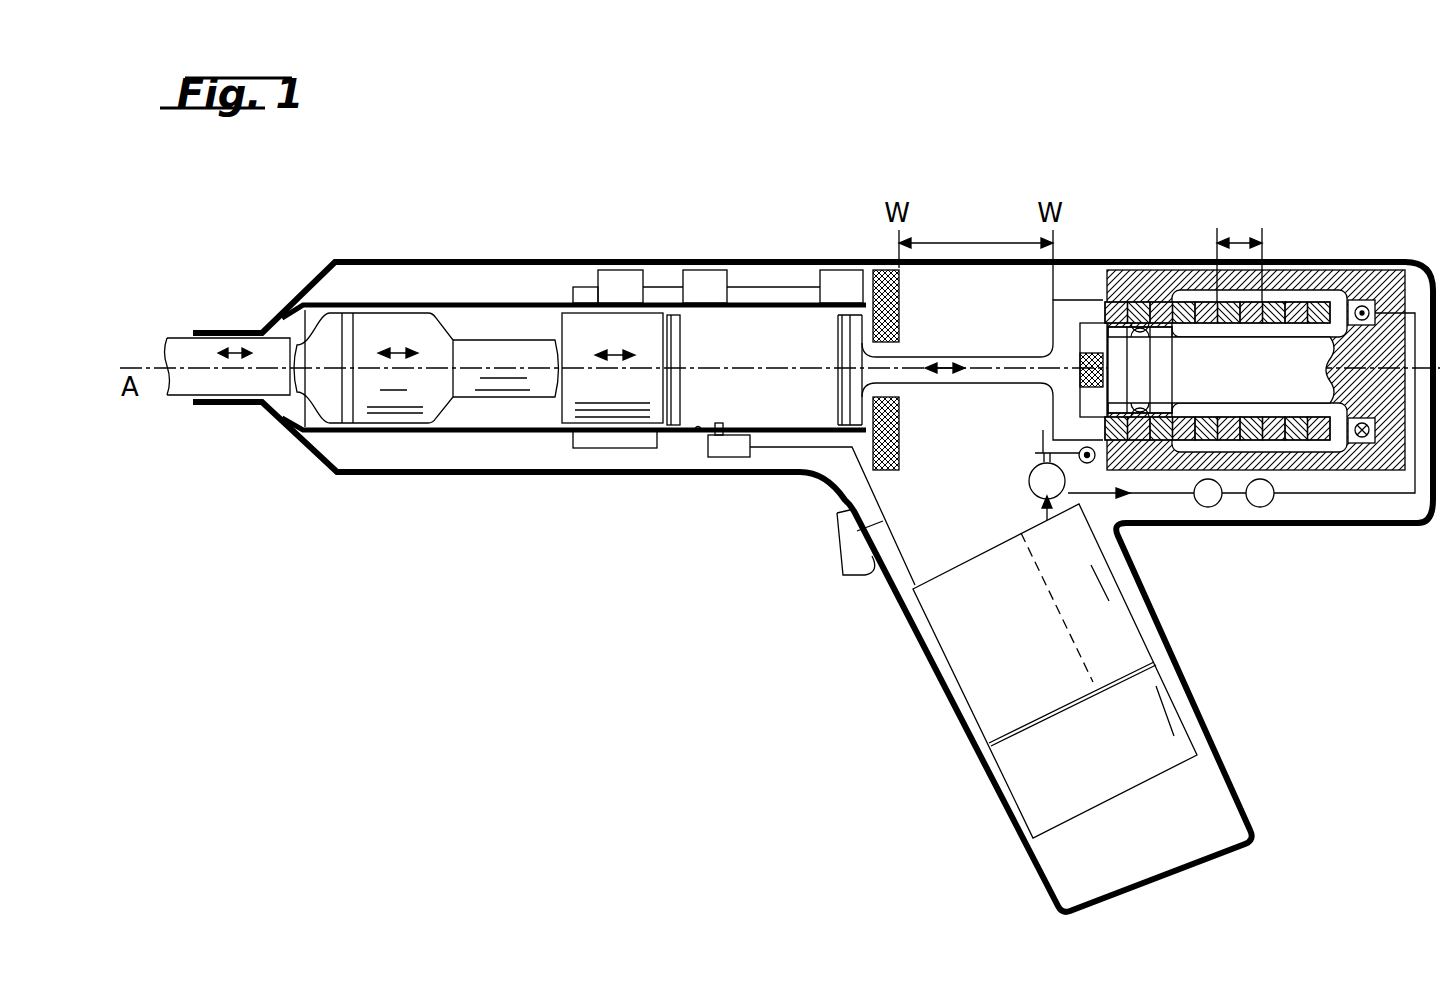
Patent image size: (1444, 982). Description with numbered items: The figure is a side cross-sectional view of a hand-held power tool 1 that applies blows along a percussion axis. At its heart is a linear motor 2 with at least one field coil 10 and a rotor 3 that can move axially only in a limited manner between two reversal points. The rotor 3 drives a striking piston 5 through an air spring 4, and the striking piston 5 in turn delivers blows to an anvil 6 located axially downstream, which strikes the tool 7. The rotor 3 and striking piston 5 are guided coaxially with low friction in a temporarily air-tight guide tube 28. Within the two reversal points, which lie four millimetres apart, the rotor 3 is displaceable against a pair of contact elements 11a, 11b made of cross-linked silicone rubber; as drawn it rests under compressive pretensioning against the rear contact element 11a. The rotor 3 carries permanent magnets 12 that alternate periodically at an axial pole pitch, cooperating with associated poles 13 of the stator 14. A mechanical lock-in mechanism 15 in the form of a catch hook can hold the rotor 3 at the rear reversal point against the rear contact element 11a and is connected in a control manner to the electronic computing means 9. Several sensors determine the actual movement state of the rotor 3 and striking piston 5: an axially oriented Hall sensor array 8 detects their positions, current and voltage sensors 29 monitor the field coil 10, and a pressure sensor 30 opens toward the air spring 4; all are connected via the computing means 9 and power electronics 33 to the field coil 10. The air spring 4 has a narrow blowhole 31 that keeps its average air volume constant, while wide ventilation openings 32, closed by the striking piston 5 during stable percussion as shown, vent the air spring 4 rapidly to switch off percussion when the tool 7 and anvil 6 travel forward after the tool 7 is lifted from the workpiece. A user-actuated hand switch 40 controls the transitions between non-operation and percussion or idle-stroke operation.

The hand-held power tool 1 is at (540, 553).
The linear motor 2 is at (1022, 394).
The rotor 3 is at (1053, 400).
The air spring 4 is at (793, 340).
The striking piston 5 is at (578, 337).
The anvil 6 is at (452, 350).
The tool 7 is at (260, 352).
The Hall sensor array 8 is at (620, 287).
The electronic computing means 9 is at (960, 641).
The field coil 10 is at (1363, 298).
The rear contact element 11a is at (1080, 366).
The contact element 11b is at (898, 333).
The permanent magnets 12 is at (1287, 300).
The poles 13 is at (1172, 266).
The stator 14 is at (1232, 386).
The mechanical lock-in mechanism 15 is at (1040, 452).
The guide tube 28 is at (378, 305).
The current and voltage sensors 29 is at (1224, 510).
The pressure sensor 30 is at (733, 455).
The blowhole 31 is at (698, 433).
The ventilation openings 32 is at (653, 435).
The power electronics 33 is at (1113, 623).
The hand switch 40 is at (845, 545).